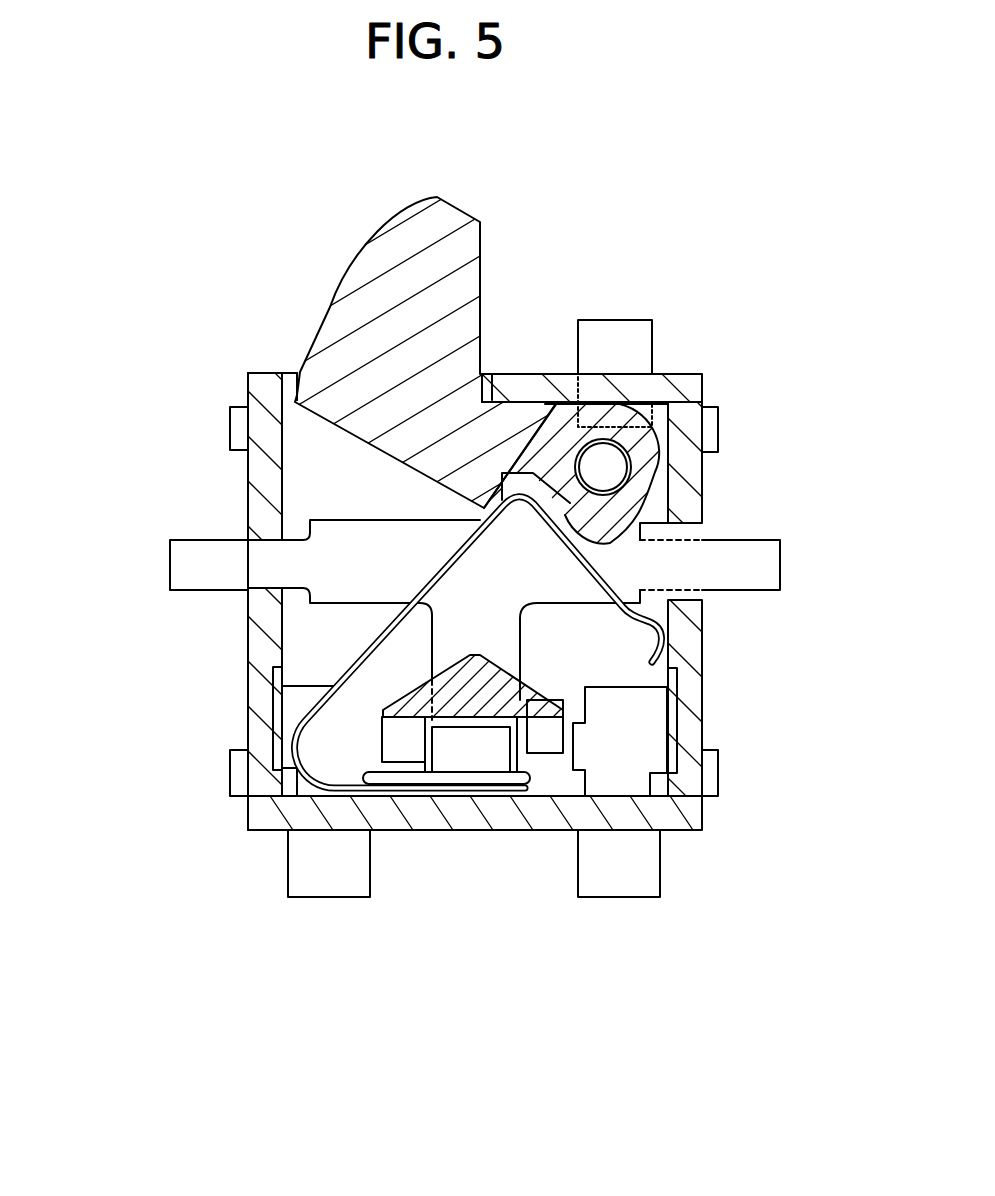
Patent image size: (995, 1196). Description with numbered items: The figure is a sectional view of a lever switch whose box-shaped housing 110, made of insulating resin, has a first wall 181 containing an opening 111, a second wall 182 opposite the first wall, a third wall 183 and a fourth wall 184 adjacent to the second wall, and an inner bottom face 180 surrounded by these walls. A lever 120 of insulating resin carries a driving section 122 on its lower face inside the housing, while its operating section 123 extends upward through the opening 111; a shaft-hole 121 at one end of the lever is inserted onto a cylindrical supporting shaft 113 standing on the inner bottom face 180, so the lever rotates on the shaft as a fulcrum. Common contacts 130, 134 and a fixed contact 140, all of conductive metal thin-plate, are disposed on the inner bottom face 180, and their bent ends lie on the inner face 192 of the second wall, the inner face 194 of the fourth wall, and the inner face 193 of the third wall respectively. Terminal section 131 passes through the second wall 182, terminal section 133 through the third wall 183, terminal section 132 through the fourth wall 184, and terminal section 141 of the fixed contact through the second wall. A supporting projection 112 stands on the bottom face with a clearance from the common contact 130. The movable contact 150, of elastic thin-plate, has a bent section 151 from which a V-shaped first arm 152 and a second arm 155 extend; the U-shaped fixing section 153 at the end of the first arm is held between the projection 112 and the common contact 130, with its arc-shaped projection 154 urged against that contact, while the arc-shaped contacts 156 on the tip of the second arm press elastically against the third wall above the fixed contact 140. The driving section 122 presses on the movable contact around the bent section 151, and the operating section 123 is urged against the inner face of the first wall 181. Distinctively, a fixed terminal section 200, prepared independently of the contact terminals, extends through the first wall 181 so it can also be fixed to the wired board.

The housing 110 is at (518, 659).
The opening 111 is at (285, 372).
The supporting projection 112 is at (403, 718).
The supporting shaft 113 is at (613, 457).
The lever 120 is at (585, 424).
The shaft-hole 121 is at (580, 460).
The driving section 122 is at (465, 503).
The operating section 123 is at (400, 262).
The common contact 130 is at (311, 733).
The terminal section 131 is at (313, 892).
The terminal section 132 is at (175, 553).
The terminal section 133 is at (747, 590).
The common contact 134 is at (420, 735).
The fixed contact 140 is at (729, 837).
The terminal section 141 is at (635, 892).
The movable contact 150 is at (468, 739).
The bent section 151 is at (570, 503).
The first arm 152 is at (363, 647).
The fixing section 153 is at (500, 760).
The arc-shaped projection 154 is at (473, 790).
The second arm 155 is at (596, 558).
The arc-shaped contacts 156 is at (667, 632).
The inner bottom face 180 is at (310, 445).
The first wall 181 is at (505, 392).
The second wall 182 is at (588, 812).
The third wall 183 is at (690, 493).
The fourth wall 184 is at (265, 527).
The inner face 192 is at (500, 740).
The inner face 193 is at (670, 658).
The inner face 194 is at (282, 653).
The fixed terminal section 200 is at (643, 320).